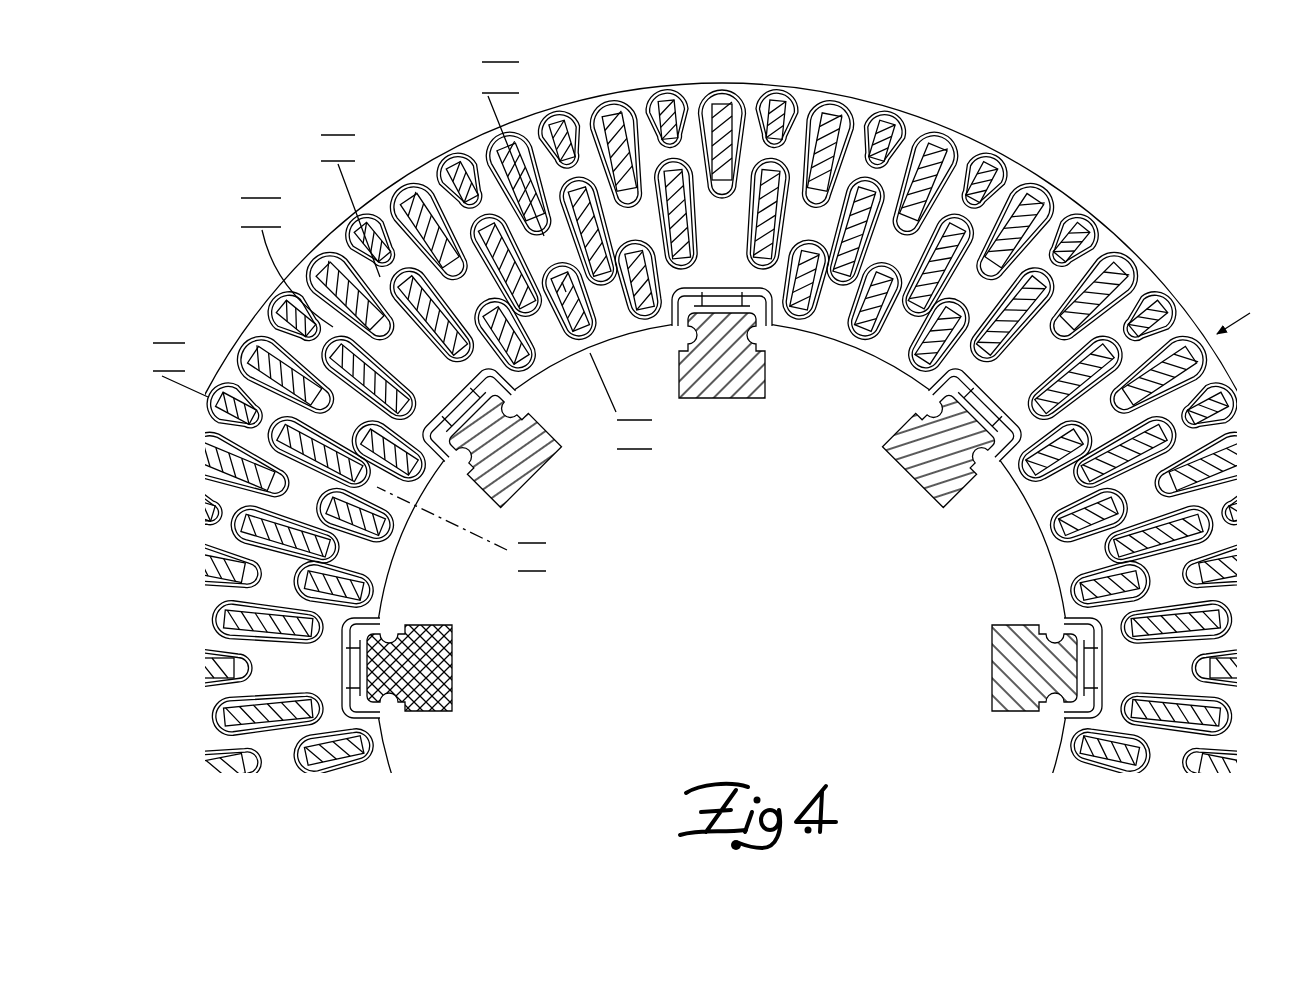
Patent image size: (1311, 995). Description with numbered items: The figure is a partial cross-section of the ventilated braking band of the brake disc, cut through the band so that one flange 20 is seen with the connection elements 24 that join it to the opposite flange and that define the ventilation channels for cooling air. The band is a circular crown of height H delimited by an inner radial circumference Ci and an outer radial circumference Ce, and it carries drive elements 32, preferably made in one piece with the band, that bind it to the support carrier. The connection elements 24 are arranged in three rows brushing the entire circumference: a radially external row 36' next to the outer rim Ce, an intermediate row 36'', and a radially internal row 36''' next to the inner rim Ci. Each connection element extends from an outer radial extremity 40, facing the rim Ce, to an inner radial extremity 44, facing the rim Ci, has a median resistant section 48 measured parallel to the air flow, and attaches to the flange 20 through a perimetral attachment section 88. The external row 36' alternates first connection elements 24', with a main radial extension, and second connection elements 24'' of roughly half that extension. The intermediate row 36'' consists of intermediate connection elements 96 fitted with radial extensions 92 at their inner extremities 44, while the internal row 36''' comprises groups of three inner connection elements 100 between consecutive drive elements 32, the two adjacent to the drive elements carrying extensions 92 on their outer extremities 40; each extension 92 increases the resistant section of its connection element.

The flange 20 is at (873, 110).
The outer radial extremity 40 is at (962, 127).
The outer radial circumference Ce is at (1130, 234).
The inner radial circumference Ci is at (1055, 742).
The perimetral attachment section 88 is at (227, 350).
The height H is at (1012, 480).
The drive element 32 is at (433, 662).
The median resistant section 48 is at (460, 453).
The inner connection element 100 is at (380, 707).
The connection element 24 is at (719, 438).
The first connection element 24' is at (651, 123).
The second connection element 24'' is at (783, 115).
The intermediate connection element 96 is at (277, 650).
The radially external row 36' is at (216, 503).
The intermediate row 36'' is at (243, 595).
The radially internal row 36''' is at (350, 781).
The extension 92 is at (637, 232).
The inner radial extremity 44 is at (905, 255).